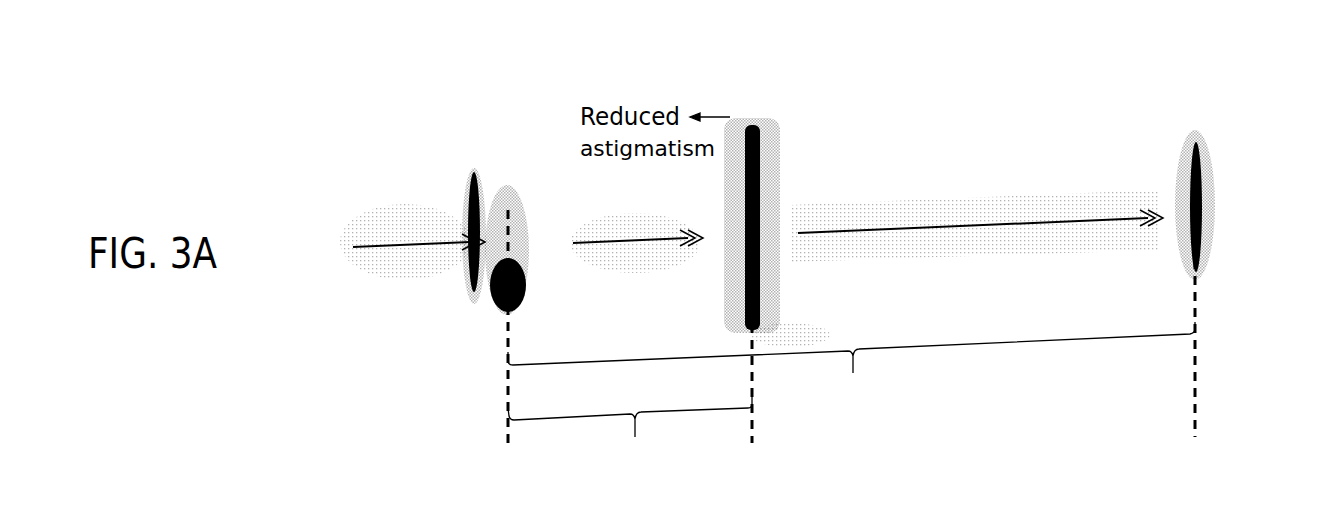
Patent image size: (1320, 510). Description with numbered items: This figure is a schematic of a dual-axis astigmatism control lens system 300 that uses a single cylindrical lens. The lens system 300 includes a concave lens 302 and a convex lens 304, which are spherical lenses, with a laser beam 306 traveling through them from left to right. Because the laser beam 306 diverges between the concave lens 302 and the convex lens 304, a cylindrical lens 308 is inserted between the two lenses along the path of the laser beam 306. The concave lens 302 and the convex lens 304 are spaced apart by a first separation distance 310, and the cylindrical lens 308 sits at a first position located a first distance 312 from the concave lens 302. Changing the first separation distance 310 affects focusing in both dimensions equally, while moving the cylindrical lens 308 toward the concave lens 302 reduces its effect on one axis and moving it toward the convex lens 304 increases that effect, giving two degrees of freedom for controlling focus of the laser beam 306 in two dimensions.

The lens system 300 is at (365, 122).
The concave lens 302 is at (490, 178).
The convex lens 304 is at (1195, 145).
The laser beam 306 is at (375, 266).
The cylindrical lens 308 is at (755, 162).
The first separation distance 310 is at (851, 373).
The first distance 312 is at (630, 440).